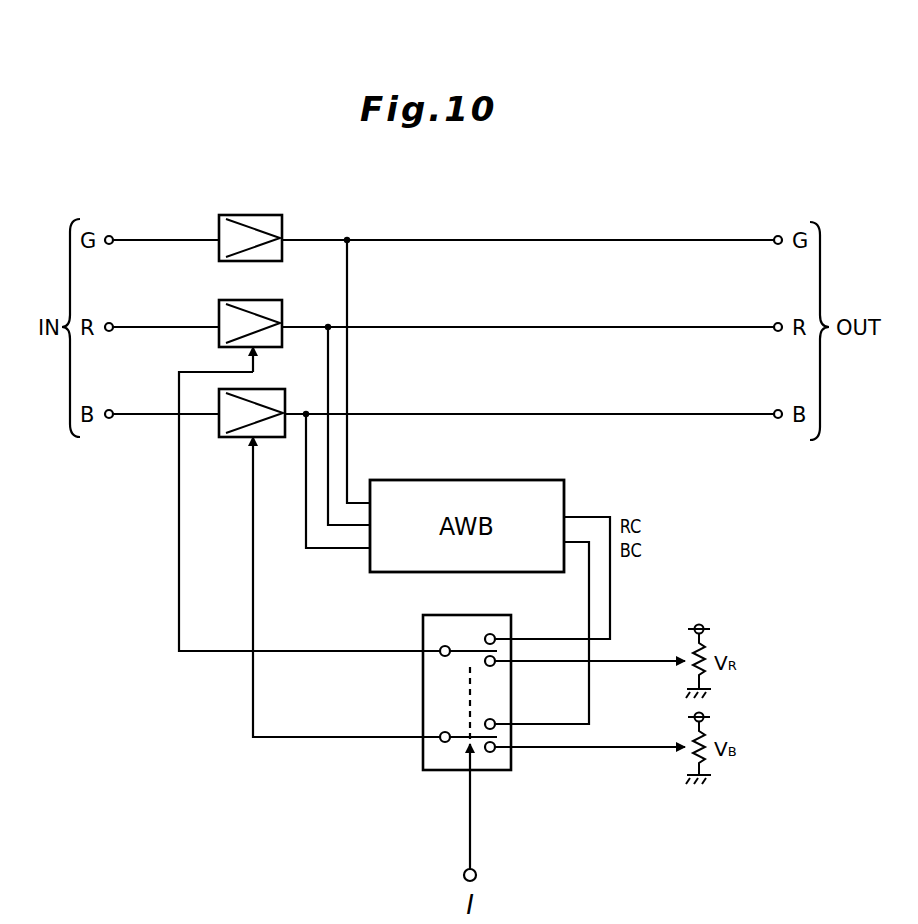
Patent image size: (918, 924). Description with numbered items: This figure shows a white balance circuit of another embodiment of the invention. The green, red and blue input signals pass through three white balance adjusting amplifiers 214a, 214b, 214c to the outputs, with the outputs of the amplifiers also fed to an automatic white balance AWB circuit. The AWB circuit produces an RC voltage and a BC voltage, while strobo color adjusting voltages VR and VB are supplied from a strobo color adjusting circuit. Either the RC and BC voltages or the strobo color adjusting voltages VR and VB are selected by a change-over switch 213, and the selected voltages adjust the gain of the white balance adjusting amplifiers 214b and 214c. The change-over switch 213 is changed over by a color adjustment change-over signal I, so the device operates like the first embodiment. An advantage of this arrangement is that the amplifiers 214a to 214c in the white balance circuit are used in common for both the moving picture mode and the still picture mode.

The white balance adjusting amplifier 214a is at (266, 215).
The white balance adjusting amplifier 214b is at (266, 300).
The white balance adjusting amplifier 214c is at (258, 390).
The change-over switch 213 is at (433, 771).